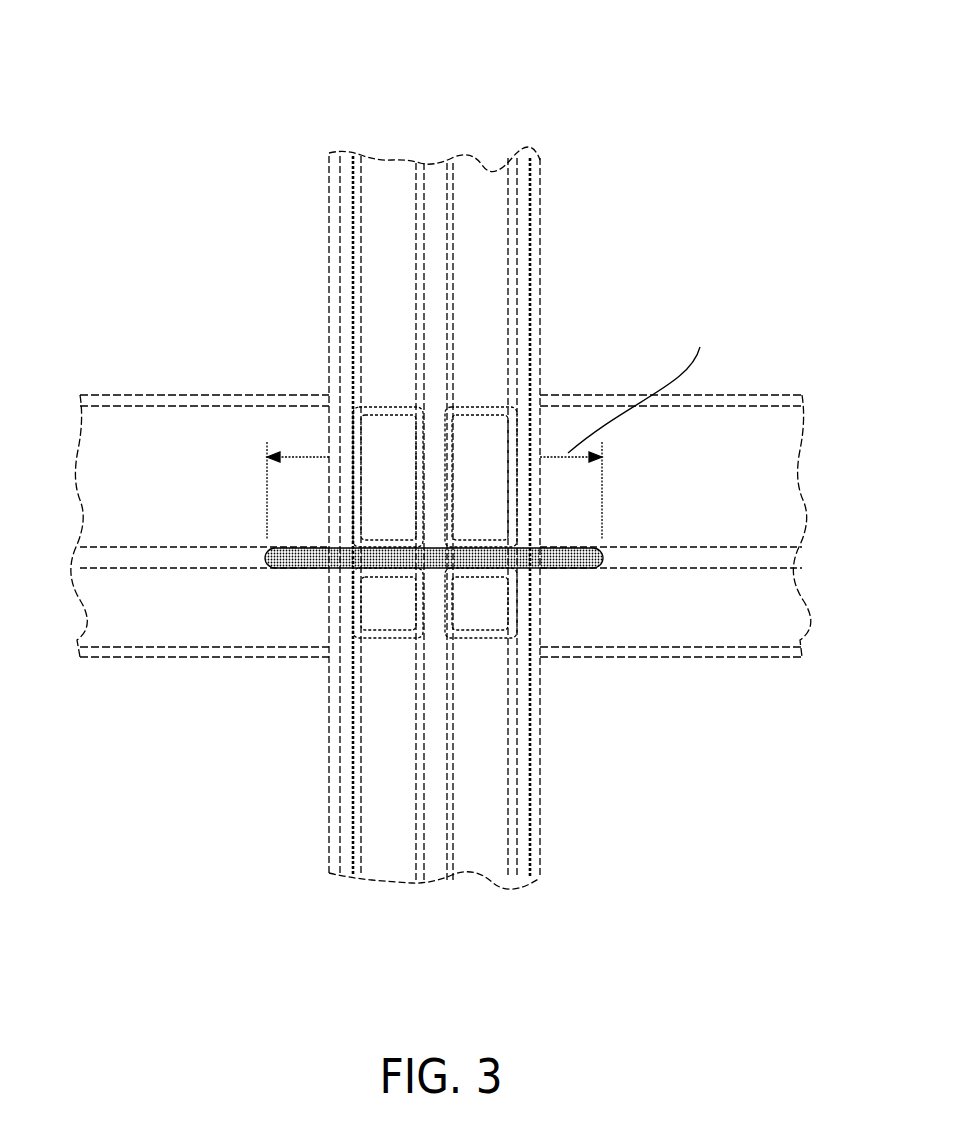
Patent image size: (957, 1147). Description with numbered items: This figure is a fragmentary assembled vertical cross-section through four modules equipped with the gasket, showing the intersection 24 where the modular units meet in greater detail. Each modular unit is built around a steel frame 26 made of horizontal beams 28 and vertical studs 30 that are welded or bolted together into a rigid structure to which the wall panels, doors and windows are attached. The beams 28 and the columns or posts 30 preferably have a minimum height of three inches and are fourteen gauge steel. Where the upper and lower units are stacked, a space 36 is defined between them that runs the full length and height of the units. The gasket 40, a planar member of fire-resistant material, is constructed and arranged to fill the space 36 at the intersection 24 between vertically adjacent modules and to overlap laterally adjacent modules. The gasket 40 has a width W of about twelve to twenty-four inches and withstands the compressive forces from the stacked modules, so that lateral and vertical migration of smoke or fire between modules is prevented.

The intersection 24 is at (462, 506).
The steel frame 26 is at (378, 158).
The horizontal beam 28 is at (213, 628).
The vertical stud 30 is at (368, 185).
The space 36 is at (437, 187).
The gasket 40 is at (563, 547).